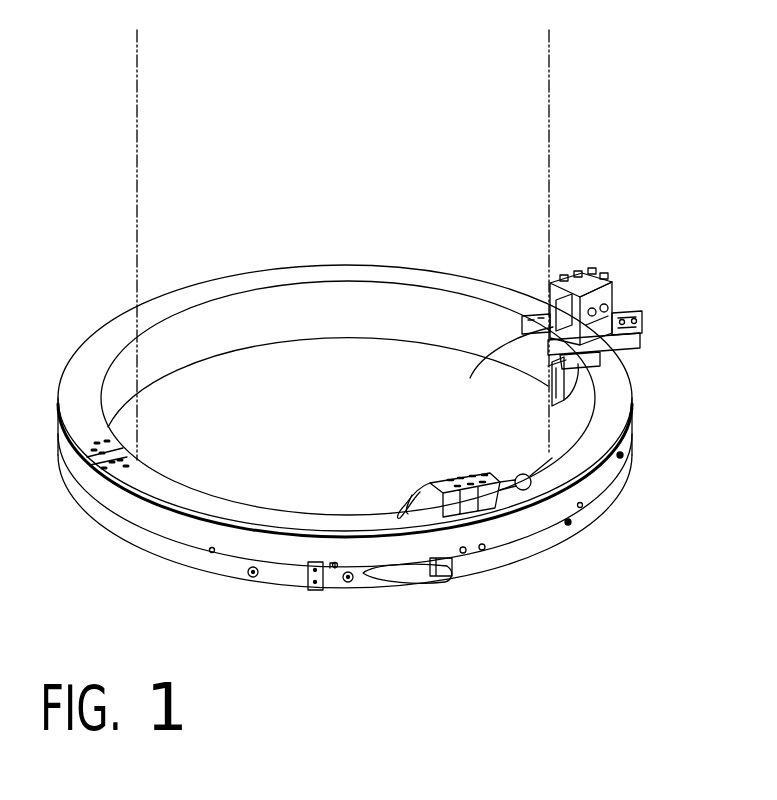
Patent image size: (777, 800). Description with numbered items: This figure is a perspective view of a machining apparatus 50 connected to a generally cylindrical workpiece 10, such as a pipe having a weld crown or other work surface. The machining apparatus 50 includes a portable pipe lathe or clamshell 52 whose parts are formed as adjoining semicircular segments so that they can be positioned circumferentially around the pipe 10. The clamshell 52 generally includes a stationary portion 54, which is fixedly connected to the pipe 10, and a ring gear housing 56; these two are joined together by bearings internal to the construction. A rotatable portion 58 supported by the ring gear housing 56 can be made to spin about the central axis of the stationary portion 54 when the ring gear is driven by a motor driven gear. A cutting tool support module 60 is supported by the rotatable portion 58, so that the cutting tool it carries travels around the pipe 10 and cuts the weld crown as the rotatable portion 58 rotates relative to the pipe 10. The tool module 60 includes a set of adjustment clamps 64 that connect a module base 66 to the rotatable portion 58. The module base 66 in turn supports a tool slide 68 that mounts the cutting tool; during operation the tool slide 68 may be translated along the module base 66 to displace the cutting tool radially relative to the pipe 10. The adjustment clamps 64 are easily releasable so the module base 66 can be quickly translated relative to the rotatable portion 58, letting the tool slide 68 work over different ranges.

The workpiece 10 is at (549, 75).
The machining apparatus 50 is at (593, 196).
The clamshell 52 is at (508, 572).
The stationary portion 54 is at (582, 526).
The ring gear housing 56 is at (631, 432).
The rotatable portion 58 is at (627, 400).
The cutting tool support module 60 is at (600, 290).
The adjustment clamps 64 is at (560, 382).
The module base 66 is at (632, 331).
The tool slide 68 is at (583, 274).